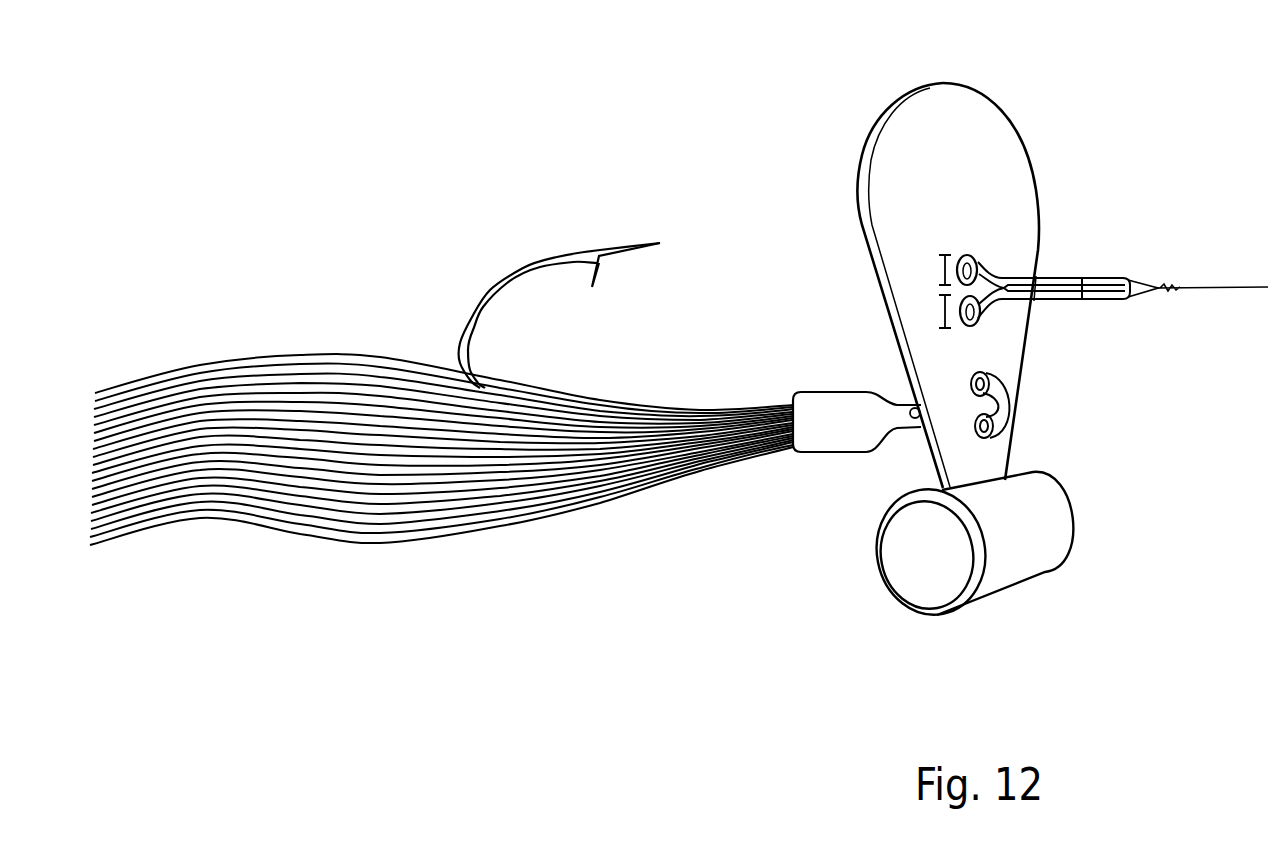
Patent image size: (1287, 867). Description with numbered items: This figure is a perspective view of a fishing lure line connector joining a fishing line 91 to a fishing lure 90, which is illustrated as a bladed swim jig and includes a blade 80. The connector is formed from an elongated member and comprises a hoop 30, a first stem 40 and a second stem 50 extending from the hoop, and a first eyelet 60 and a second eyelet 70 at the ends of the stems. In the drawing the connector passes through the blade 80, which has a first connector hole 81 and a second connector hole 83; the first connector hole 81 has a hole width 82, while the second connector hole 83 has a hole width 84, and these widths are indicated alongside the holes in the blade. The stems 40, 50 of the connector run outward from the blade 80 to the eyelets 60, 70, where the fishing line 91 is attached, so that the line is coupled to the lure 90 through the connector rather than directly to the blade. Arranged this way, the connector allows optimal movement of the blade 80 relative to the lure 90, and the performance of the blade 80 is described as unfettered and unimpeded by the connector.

The blade 80 is at (965, 112).
The second connector hole 83 is at (960, 255).
The hoop 30 is at (978, 261).
The second stem 50 is at (1058, 278).
The second eyelet 70 is at (1105, 283).
The first eyelet 60 is at (1110, 297).
The fishing line 91 is at (1208, 287).
The hole width 84 is at (938, 273).
The hole width 82 is at (937, 318).
The first connector hole 81 is at (970, 330).
The first stem 40 is at (1042, 293).
The fishing lure 90 is at (837, 430).